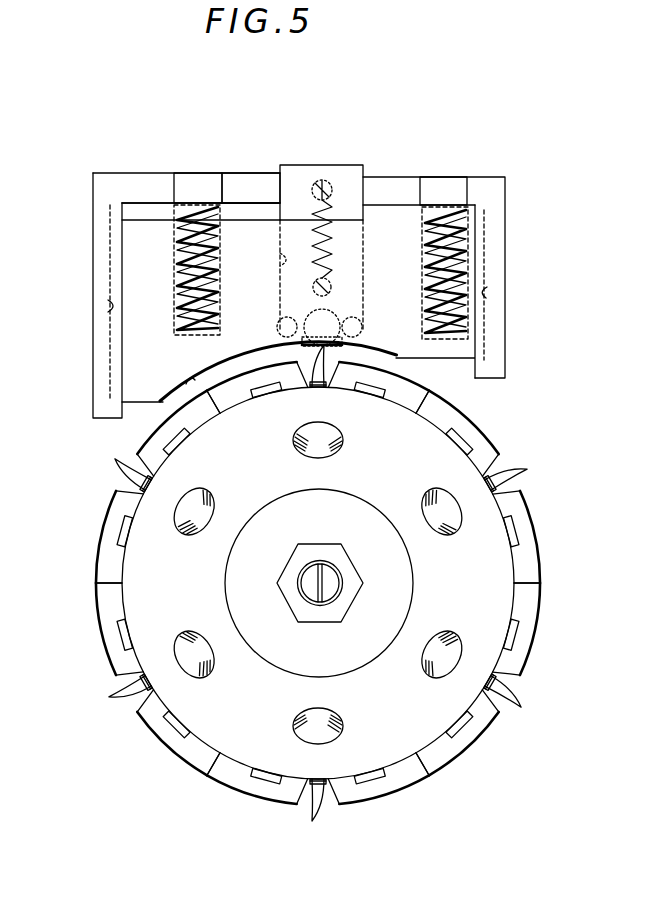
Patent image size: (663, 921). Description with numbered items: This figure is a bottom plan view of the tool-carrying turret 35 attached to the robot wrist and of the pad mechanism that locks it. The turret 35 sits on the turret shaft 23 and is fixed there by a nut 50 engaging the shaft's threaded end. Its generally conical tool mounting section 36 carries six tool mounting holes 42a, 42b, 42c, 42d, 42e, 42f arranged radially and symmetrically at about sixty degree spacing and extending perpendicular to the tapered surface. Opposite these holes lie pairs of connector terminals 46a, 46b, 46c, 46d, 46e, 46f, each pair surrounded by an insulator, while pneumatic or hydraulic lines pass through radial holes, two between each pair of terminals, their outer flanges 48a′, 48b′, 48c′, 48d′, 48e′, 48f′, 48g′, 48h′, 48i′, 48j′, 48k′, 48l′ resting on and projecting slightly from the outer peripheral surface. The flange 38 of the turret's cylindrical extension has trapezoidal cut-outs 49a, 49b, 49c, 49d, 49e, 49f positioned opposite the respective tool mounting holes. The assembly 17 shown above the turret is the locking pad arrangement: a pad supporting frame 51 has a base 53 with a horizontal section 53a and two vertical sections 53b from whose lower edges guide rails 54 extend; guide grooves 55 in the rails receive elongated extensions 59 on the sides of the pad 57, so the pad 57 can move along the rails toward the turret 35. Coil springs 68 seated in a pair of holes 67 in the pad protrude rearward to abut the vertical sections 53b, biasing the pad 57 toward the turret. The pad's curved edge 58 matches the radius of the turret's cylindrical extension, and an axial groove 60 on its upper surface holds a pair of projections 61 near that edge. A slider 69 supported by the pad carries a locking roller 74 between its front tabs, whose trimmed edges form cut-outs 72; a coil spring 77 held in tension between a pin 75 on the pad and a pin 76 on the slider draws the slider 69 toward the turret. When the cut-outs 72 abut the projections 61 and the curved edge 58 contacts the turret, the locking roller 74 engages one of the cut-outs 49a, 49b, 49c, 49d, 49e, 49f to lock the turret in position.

The clutch assembly 17 is at (327, 489).
The turret shaft 23 is at (310, 590).
The turret 35 is at (318, 589).
The conical tool mounting section 36 is at (500, 598).
The flange 38 is at (318, 589).
The tool mounting hole 42a is at (341, 449).
The tool mounting hole 42b is at (198, 532).
The tool mounting hole 42c is at (213, 669).
The tool mounting hole 42d is at (342, 731).
The tool mounting hole 42e is at (428, 668).
The tool mounting hole 42f is at (450, 533).
The connector terminals 46a is at (311, 821).
The connector terminals 46b is at (520, 702).
The connector terminals 46c is at (527, 463).
The connector terminals 46d is at (327, 380).
The connector terminals 46e is at (114, 461).
The connector terminals 46f is at (118, 711).
The outer flange 48a′ is at (268, 790).
The outer flange 48b′ is at (386, 779).
The outer flange 48c′ is at (454, 733).
The outer flange 48d′ is at (513, 634).
The outer flange 48e′ is at (517, 546).
The outer flange 48f′ is at (466, 441).
The outer flange 48g′ is at (383, 393).
The outer flange 48h′ is at (268, 392).
The outer flange 48i′ is at (182, 443).
The outer flange 48j′ is at (122, 536).
The outer flange 48k′ is at (123, 632).
The outer flange 48l′ is at (178, 739).
The cut-out 49a is at (332, 802).
The cut-out 49b is at (492, 700).
The cut-out 49c is at (512, 491).
The cut-out 49d is at (342, 367).
The cut-out 49e is at (117, 487).
The cut-out 49f is at (128, 680).
The nut 50 is at (347, 598).
The pad supporting frame 51 is at (398, 177).
The base 53 is at (242, 180).
The horizontal section 53a is at (266, 182).
The vertical sections 53b is at (193, 180).
The guide rails 54 is at (100, 277).
The guide grooves 55 is at (108, 312).
The pad 57 is at (130, 234).
The curved edge 58 is at (188, 379).
The elongated extensions 59 is at (113, 253).
The axial groove 60 is at (280, 266).
The projections 61 is at (303, 338).
The holes 67 is at (176, 293).
The coil springs 68 is at (182, 253).
The slider 69 is at (355, 172).
The cut-outs 72 is at (284, 318).
The locking roller 74 is at (336, 314).
The pin 75 is at (333, 287).
The pin 76 is at (323, 180).
The coil spring 77 is at (312, 227).